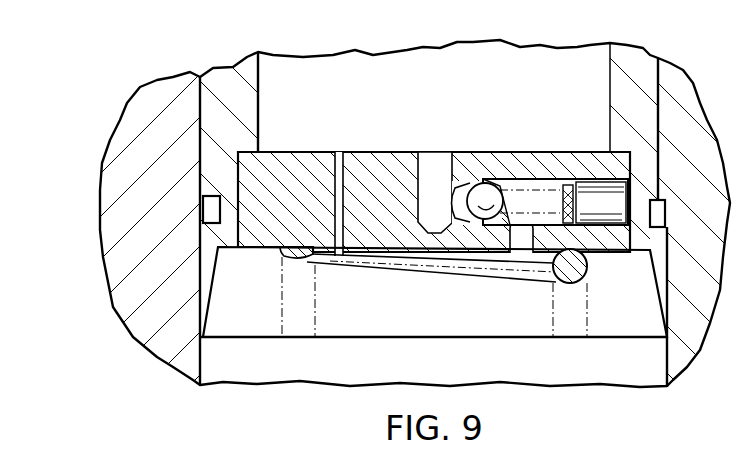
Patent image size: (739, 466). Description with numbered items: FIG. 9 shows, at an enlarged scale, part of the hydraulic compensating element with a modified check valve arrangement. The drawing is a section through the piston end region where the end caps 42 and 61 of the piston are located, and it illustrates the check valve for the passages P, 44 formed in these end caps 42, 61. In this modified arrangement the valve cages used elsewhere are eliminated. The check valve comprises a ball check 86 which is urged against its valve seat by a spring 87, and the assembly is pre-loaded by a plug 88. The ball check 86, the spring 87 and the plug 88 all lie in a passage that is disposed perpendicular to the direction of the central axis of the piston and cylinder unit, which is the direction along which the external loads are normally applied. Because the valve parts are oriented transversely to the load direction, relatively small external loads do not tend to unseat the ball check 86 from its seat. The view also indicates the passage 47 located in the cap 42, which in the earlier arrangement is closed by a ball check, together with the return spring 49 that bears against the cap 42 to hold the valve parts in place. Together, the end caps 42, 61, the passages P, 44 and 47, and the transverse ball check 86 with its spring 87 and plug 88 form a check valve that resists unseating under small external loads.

The inner end wall or cap 42 is at (434, 233).
The piston end cap 61 is at (302, 150).
The spring-loaded check-valve 44 is at (413, 171).
The passage P is at (433, 157).
The ball check 86 is at (484, 198).
The spring 87 is at (562, 200).
The plug 88 is at (604, 197).
The return spring 49 is at (435, 308).
The passage 47 is at (293, 262).